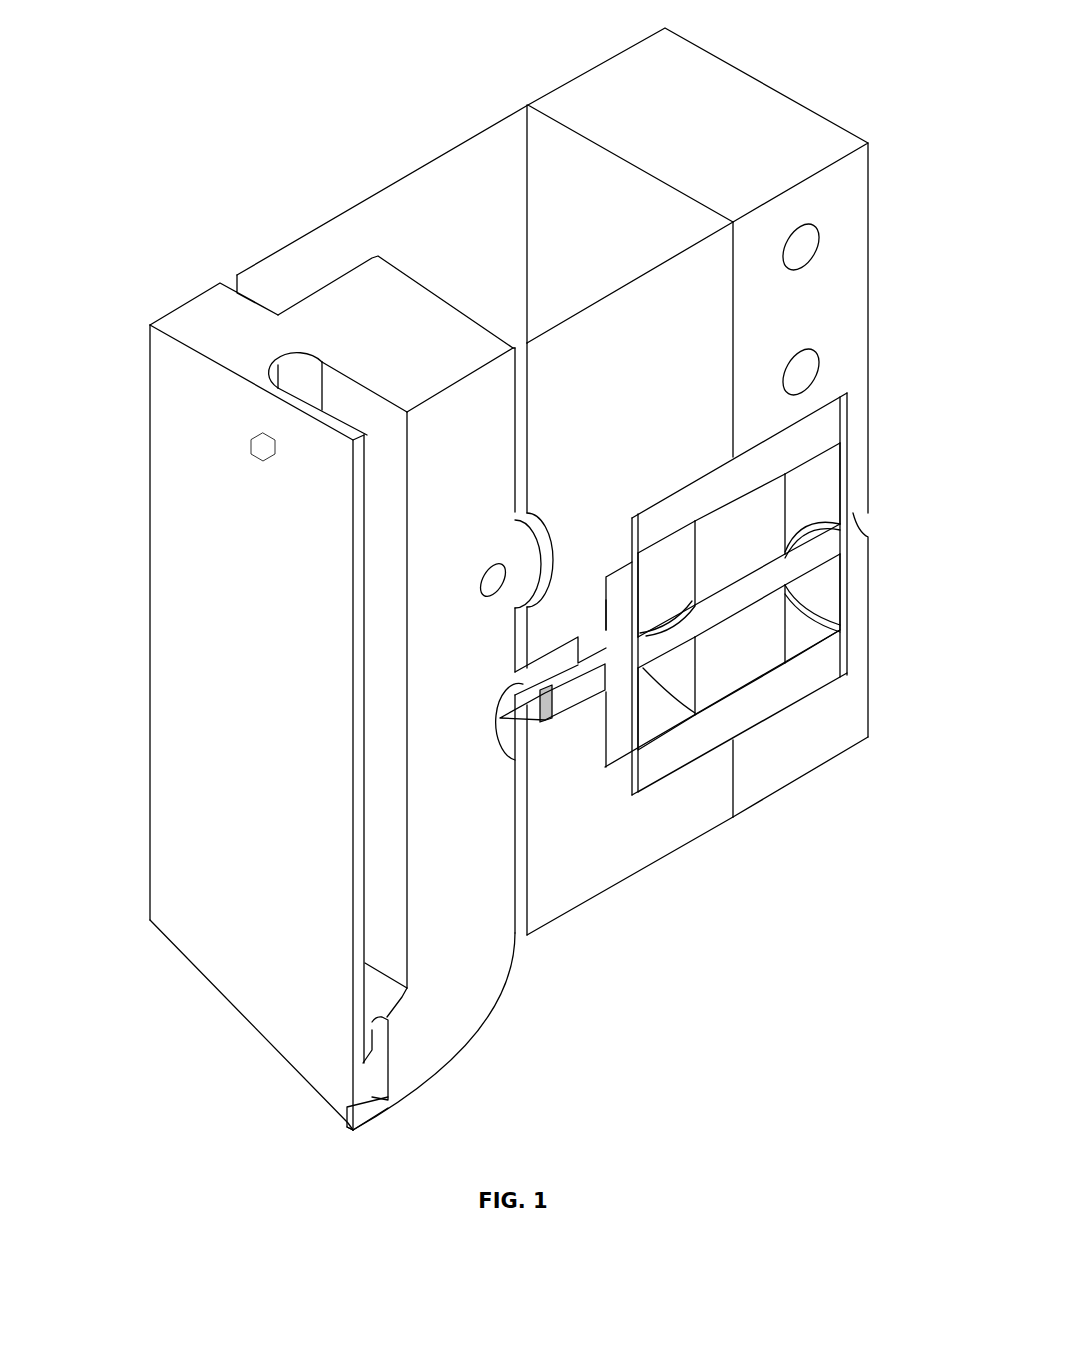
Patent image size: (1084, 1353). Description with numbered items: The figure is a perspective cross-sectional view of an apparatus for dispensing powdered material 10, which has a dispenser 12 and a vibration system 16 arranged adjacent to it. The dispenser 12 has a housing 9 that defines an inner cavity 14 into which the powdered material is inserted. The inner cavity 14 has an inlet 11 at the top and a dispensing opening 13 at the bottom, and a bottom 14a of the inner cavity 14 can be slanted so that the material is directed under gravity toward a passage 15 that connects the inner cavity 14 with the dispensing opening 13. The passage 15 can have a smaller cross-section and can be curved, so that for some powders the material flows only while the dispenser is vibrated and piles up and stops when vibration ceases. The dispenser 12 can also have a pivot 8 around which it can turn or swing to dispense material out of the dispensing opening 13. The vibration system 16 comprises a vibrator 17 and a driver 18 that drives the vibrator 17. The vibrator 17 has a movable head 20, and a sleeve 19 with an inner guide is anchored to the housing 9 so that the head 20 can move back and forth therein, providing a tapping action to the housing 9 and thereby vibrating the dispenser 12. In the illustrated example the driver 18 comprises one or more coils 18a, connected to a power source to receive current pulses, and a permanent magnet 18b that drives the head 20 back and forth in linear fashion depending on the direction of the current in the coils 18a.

The pivot 8 is at (497, 578).
The housing 9 is at (205, 815).
The apparatus for dispensing powdered material 10 is at (870, 74).
The inlet 11 is at (317, 393).
The dispenser 12 is at (147, 620).
The dispensing opening 13 is at (343, 1123).
The inner cavity 14 is at (388, 832).
The bottom 14a is at (400, 997).
The passage 15 is at (390, 1082).
The vibration system 16 is at (835, 741).
The vibrator 17 is at (675, 637).
The driver 18 is at (800, 623).
The coils 18a is at (803, 444).
The permanent magnet 18b is at (742, 571).
The sleeve 19 is at (538, 740).
The head 20 is at (500, 718).